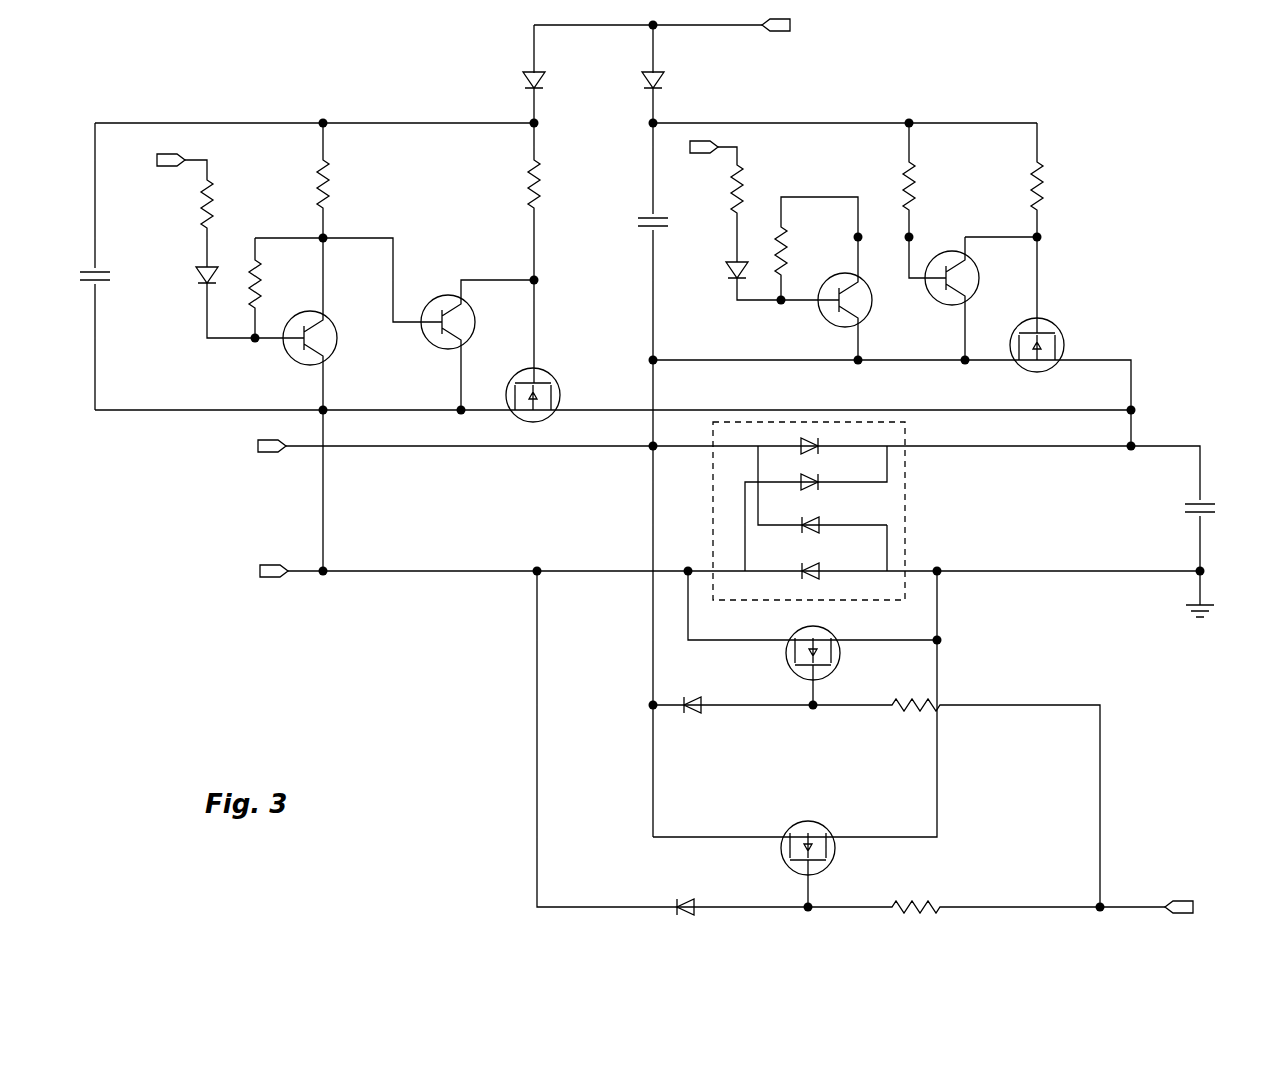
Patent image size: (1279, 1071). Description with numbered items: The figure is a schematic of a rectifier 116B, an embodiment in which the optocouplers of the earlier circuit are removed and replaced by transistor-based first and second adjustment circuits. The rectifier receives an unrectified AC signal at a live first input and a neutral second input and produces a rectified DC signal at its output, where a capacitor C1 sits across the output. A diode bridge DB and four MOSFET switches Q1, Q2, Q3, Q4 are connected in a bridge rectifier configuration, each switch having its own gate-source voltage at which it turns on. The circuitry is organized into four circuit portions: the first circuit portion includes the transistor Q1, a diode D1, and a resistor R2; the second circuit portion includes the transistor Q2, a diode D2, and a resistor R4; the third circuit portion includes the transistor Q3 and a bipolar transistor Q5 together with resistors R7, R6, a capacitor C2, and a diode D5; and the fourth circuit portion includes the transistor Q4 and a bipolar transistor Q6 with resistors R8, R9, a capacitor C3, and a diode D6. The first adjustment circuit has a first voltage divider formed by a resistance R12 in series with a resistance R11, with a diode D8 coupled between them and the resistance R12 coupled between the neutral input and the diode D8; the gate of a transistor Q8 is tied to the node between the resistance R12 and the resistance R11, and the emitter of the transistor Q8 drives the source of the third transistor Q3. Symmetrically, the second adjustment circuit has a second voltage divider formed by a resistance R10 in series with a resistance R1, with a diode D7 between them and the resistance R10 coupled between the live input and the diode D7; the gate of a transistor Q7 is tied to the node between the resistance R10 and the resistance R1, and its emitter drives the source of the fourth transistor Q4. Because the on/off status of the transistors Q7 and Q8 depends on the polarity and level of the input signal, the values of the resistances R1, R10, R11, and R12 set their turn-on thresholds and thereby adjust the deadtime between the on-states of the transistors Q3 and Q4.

The rectifier 116B is at (1102, 95).
The resistance R1 is at (269, 283).
The resistor R2 is at (917, 688).
The resistor R4 is at (917, 892).
The resistor R6 is at (1058, 185).
The resistor R7 is at (931, 185).
The resistor R8 is at (556, 185).
The resistor R9 is at (346, 183).
The resistance R10 is at (229, 203).
The resistance R11 is at (805, 250).
The resistance R12 is at (759, 188).
The switch Q1 is at (813, 639).
The switch Q2 is at (808, 835).
The third transistor Q3 is at (1052, 341).
The fourth transistor Q4 is at (544, 385).
The switch Q5 is at (969, 278).
The switch Q6 is at (468, 322).
The transistor Q7 is at (328, 338).
The transistor Q8 is at (865, 300).
The diode D1 is at (699, 693).
The diode D2 is at (684, 889).
The diode D5 is at (674, 83).
The diode D6 is at (516, 83).
The diode D7 is at (220, 280).
The diode D8 is at (716, 274).
The capacitor C1 is at (1221, 501).
The capacitor C2 is at (669, 210).
The capacitor C3 is at (109, 283).
The diode bridge DB is at (828, 511).